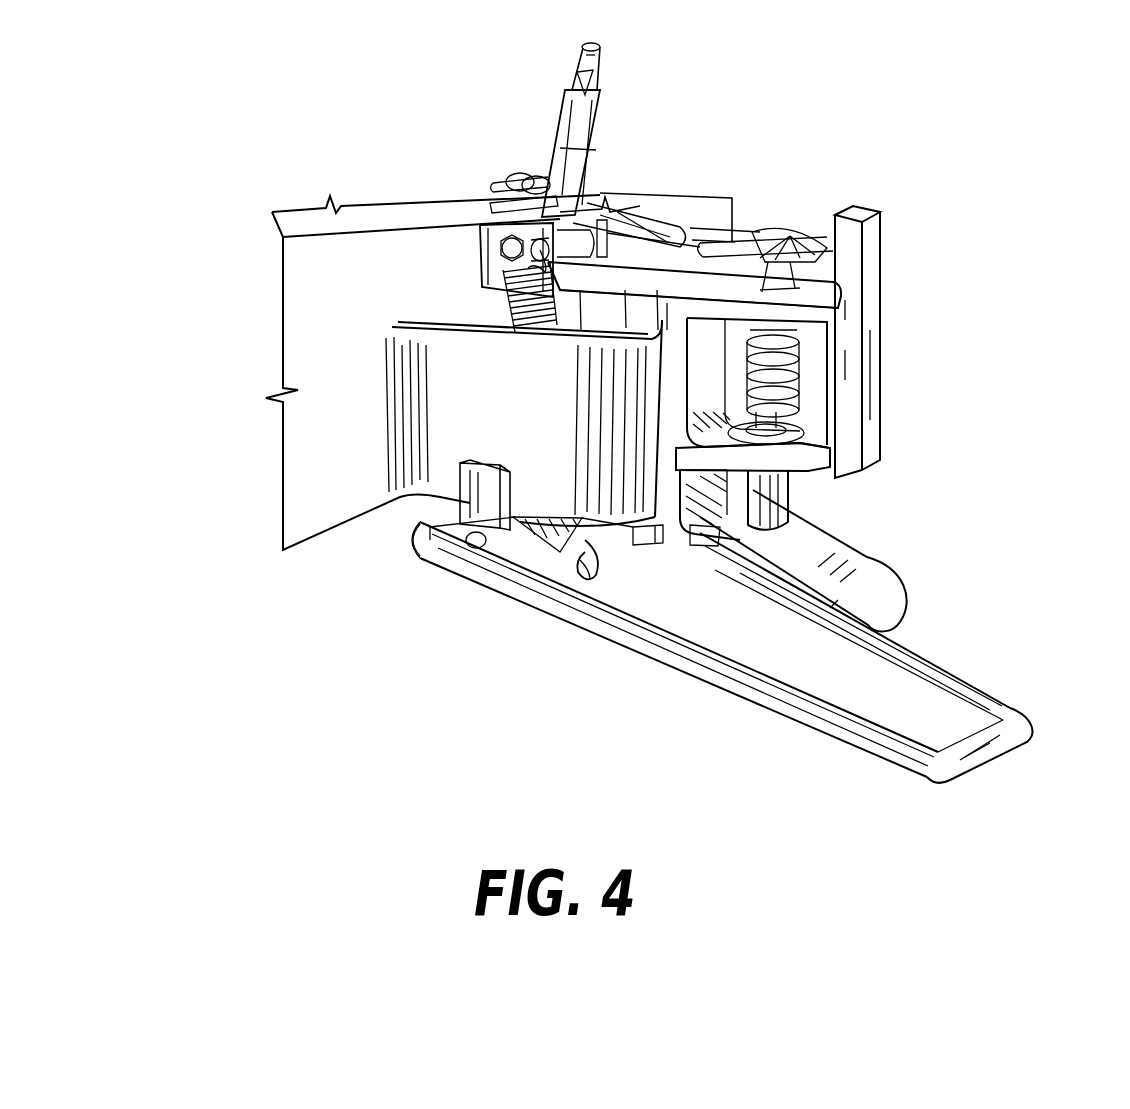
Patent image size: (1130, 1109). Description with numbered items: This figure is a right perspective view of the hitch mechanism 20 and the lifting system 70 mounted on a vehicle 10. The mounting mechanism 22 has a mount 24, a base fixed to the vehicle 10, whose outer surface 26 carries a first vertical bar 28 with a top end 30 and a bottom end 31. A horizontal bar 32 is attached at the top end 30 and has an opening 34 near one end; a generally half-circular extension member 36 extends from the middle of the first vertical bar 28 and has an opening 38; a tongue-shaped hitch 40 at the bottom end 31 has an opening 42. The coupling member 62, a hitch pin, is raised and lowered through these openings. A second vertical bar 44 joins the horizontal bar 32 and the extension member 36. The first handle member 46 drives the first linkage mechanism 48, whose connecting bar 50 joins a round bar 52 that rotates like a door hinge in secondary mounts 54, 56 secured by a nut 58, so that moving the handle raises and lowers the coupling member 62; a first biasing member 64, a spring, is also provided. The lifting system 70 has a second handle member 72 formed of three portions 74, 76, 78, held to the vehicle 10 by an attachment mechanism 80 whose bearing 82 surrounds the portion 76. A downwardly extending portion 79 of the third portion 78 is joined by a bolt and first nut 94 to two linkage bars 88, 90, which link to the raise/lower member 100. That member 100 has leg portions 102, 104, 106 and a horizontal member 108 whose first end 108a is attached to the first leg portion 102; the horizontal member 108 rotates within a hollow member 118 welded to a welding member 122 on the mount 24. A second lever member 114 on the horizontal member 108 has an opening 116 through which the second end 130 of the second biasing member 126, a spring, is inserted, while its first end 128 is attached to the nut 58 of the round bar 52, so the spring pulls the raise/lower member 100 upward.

The vehicle 10 is at (295, 433).
The hitch mechanism 20 is at (892, 305).
The mounting mechanism 22 is at (450, 425).
The mount 24 is at (536, 553).
The outer surface 26 is at (640, 520).
The first vertical bar 28 is at (683, 505).
The top end 30 is at (700, 323).
The bottom end 31 is at (652, 522).
The horizontal bar 32 is at (750, 296).
The opening 34 is at (827, 280).
The extension member 36 is at (797, 462).
The opening 38 is at (793, 473).
The hitch 40 is at (850, 573).
The opening 42 is at (777, 533).
The second vertical bar 44 is at (865, 400).
The first handle member 46 is at (585, 157).
The first linkage mechanism 48 is at (698, 237).
The connecting bar 50 is at (700, 292).
The round bar 52 is at (577, 307).
The secondary mount 54 is at (487, 230).
The secondary mount 56 is at (597, 213).
The nut 58 is at (503, 238).
The coupling member 62 is at (800, 435).
The first biasing member 64 is at (807, 383).
The lifting system 70 is at (965, 662).
The second handle member 72 is at (595, 75).
The first portion 74 is at (583, 62).
The second portion 76 is at (508, 200).
The third portion 78 is at (665, 228).
The downwardly extending portion 79 is at (650, 215).
The attachment mechanism 80 is at (492, 205).
The bearing 82 is at (523, 173).
The linkage bar 88 is at (655, 302).
The linkage bar 90 is at (617, 303).
The first nut 94 is at (717, 317).
The raise/lower member 100 is at (962, 784).
The first leg portion 102 is at (783, 700).
The leg portion 104 is at (1003, 747).
The second leg portion 106 is at (920, 652).
The horizontal member 108 is at (457, 537).
The first end 108a is at (470, 543).
The second lever member 114 is at (570, 582).
The opening 116 is at (600, 578).
The hollow member 118 is at (497, 567).
The welding member 122 is at (467, 495).
The second biasing member 126 is at (533, 320).
The first end 128 is at (505, 277).
The second end 130 is at (585, 585).